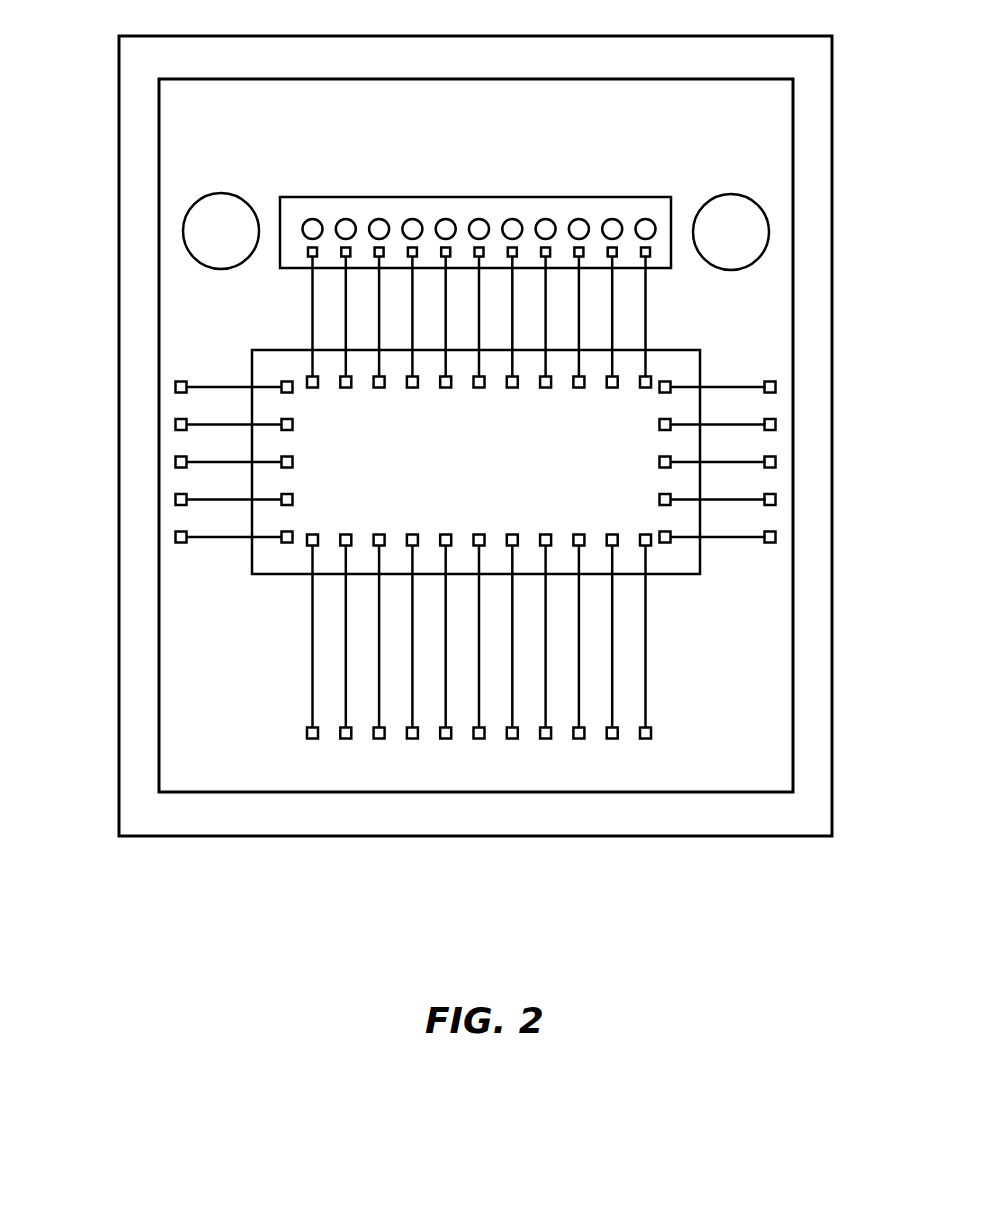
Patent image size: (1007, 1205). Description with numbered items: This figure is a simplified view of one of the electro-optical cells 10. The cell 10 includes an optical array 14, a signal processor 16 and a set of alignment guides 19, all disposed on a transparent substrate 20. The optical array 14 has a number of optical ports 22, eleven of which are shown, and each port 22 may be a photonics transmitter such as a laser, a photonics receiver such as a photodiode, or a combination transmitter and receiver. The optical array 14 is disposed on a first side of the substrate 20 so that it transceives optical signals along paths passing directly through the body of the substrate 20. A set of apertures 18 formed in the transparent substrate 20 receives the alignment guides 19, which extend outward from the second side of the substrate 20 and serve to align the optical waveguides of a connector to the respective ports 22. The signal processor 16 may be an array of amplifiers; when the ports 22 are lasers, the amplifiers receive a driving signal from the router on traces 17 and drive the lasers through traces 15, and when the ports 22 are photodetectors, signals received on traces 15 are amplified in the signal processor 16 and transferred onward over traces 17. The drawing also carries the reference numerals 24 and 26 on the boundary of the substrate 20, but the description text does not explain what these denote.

The cell 10 is at (108, 340).
The optical array 14 is at (515, 197).
The traces 15 is at (303, 303).
The signal processor 16 is at (285, 576).
The traces 17 is at (305, 675).
The apertures 18 is at (234, 195).
The alignment guides 19 is at (192, 187).
The transparent substrate 20 is at (832, 362).
The optical ports 22 is at (586, 215).
The inner boundary 24 is at (793, 316).
The border region 26 is at (810, 565).